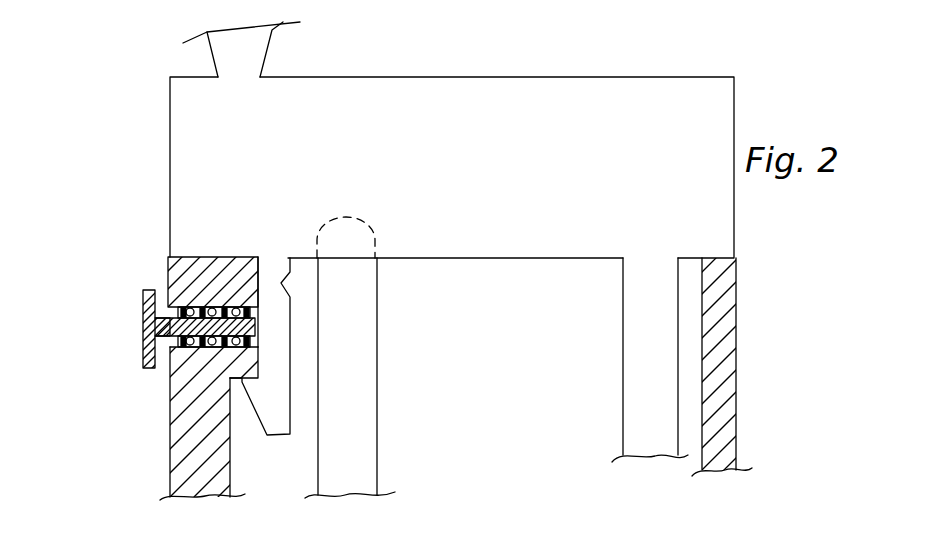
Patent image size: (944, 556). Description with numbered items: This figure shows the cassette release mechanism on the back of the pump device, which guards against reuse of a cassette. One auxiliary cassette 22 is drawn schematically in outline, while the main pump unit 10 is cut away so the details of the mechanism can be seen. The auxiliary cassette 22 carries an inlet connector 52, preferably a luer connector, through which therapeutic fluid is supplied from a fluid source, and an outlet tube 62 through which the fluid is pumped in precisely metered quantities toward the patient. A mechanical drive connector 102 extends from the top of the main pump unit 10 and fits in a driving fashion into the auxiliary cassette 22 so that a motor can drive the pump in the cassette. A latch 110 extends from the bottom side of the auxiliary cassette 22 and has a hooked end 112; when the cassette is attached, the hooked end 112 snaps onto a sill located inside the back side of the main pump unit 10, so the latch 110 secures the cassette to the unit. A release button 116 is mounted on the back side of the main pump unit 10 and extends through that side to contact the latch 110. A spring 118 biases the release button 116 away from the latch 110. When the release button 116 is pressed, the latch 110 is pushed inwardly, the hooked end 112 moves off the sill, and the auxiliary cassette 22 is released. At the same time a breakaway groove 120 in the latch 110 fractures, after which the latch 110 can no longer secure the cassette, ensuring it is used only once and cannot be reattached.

The main pump unit 10 is at (172, 420).
The auxiliary cassette 22 is at (172, 144).
The inlet connector 52 is at (258, 48).
The outlet tube 62 is at (635, 357).
The mechanical drive connector 102 is at (368, 397).
The latch 110 is at (277, 323).
The hooked end 112 is at (267, 410).
The release button 116 is at (143, 305).
The spring 118 is at (170, 376).
The breakaway groove 120 is at (295, 280).